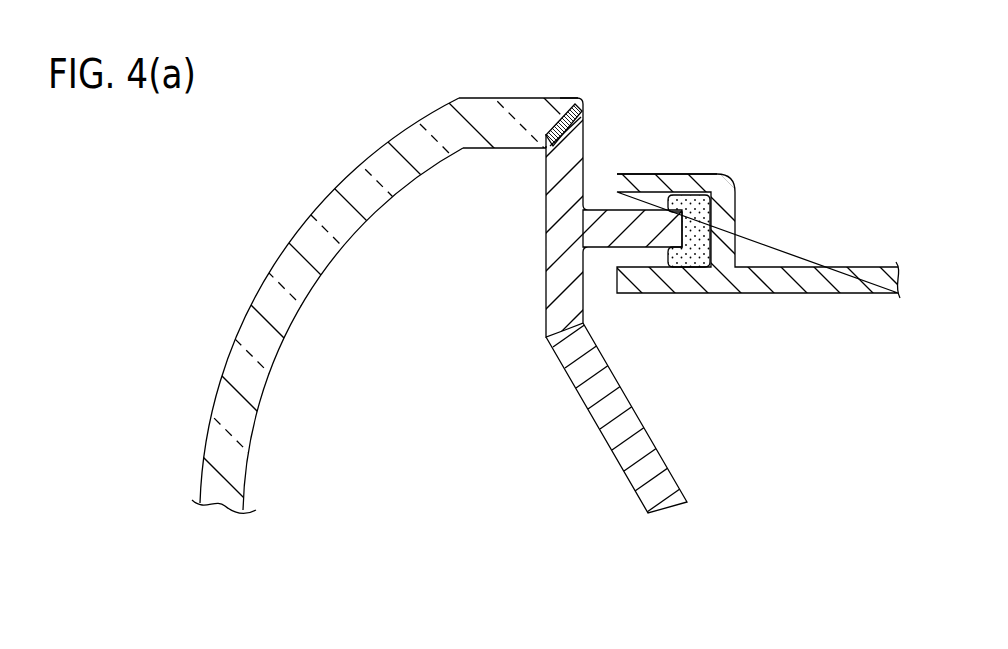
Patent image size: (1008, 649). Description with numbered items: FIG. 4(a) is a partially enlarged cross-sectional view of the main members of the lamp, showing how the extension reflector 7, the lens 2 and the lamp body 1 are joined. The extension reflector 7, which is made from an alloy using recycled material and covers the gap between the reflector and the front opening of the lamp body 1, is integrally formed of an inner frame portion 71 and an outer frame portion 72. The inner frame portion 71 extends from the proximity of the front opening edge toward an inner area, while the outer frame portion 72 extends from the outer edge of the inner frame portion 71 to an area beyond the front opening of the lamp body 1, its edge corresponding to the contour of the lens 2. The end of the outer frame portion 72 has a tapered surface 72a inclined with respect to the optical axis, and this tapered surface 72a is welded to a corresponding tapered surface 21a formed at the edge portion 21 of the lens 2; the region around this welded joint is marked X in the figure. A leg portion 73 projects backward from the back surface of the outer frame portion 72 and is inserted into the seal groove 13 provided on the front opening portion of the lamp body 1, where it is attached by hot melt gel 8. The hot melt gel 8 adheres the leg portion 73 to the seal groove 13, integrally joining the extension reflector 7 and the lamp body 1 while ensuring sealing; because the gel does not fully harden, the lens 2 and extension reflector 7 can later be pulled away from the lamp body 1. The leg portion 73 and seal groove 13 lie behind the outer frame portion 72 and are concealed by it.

The lamp body 1 is at (836, 280).
The seal groove 13 is at (737, 190).
The lens 2 is at (258, 337).
The edge portion 21 is at (487, 128).
The tapered surface 21a is at (546, 178).
The extension reflector 7 is at (583, 260).
The inner frame portion 71 is at (660, 490).
The outer frame portion 72 is at (567, 185).
The tapered surface 72a is at (577, 98).
The leg portion 73 is at (637, 228).
The hot melt gel 8 is at (688, 258).
The detail region X is at (552, 117).